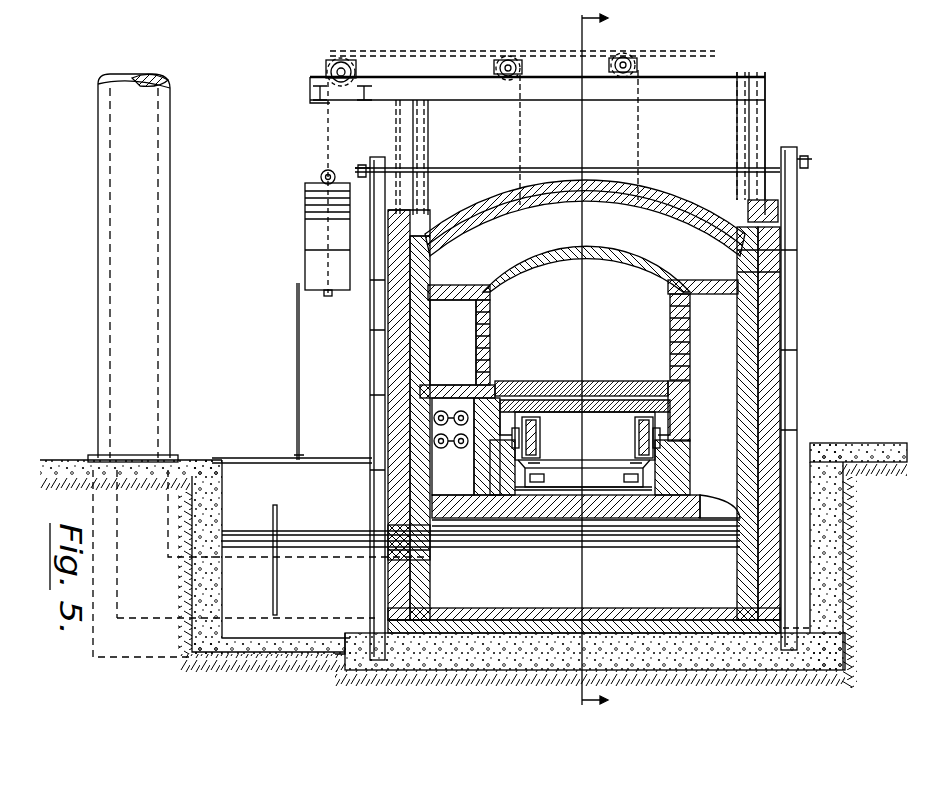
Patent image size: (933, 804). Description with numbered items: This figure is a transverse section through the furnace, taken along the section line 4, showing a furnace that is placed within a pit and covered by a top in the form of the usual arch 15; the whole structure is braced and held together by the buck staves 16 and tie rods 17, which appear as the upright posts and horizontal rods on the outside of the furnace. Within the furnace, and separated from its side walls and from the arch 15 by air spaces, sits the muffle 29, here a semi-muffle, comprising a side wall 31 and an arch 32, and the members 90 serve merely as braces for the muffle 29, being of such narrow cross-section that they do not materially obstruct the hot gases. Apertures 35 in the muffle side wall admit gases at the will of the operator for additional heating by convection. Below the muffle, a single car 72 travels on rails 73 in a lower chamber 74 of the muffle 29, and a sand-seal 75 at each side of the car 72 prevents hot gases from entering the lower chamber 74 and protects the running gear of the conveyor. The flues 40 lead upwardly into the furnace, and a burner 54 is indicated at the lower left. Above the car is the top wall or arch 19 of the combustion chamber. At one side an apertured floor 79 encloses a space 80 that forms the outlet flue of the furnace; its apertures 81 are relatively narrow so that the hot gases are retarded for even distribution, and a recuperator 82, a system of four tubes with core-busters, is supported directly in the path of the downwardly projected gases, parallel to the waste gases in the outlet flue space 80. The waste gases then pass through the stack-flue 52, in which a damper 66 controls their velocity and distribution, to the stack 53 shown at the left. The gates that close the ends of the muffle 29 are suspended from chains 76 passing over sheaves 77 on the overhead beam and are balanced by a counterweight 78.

The section line 4 is at (595, 359).
The arch 15 is at (642, 205).
The buck staves 16 is at (798, 200).
The tie rods 17 is at (700, 168).
The top wall or arch 19 is at (592, 518).
The muffle 29 is at (580, 336).
The side wall 31 is at (700, 320).
The arch 32 is at (586, 269).
The apertures 35 is at (492, 335).
The flues 40 is at (713, 429).
The stack-flue 52 is at (300, 548).
The stack 53 is at (133, 268).
The burner 54 is at (412, 549).
The damper 66 is at (279, 515).
The car 72 is at (646, 384).
The rails 73 is at (540, 468).
The lower chamber 74 is at (586, 436).
The sand-seal 75 is at (500, 408).
The chains 76 is at (460, 53).
The sheaves 77 is at (523, 68).
The counterweight 78 is at (321, 195).
The apertured floor 79 is at (453, 342).
The space 80 is at (466, 447).
The apertures 81 is at (440, 368).
The recuperator 82 is at (476, 440).
The members 90 is at (476, 290).